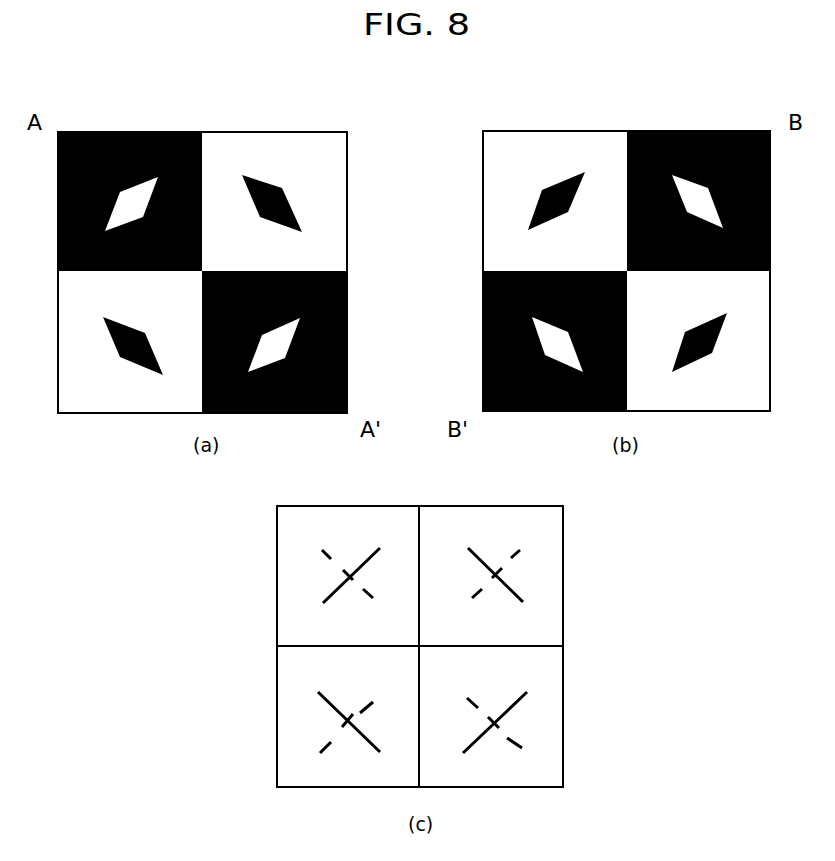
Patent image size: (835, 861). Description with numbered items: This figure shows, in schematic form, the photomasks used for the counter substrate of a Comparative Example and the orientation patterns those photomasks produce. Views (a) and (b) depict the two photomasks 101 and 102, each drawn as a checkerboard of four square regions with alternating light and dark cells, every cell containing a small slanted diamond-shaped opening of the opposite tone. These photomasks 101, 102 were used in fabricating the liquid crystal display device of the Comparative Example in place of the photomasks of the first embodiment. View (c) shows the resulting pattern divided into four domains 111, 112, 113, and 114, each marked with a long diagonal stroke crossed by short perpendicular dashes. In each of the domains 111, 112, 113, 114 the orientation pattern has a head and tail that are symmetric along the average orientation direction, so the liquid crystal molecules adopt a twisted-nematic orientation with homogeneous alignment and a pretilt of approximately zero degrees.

The photomask 101 is at (230, 120).
The photomask 102 is at (652, 118).
The domain 111 is at (300, 562).
The domain 112 is at (547, 557).
The domain 113 is at (547, 692).
The domain 114 is at (300, 693).